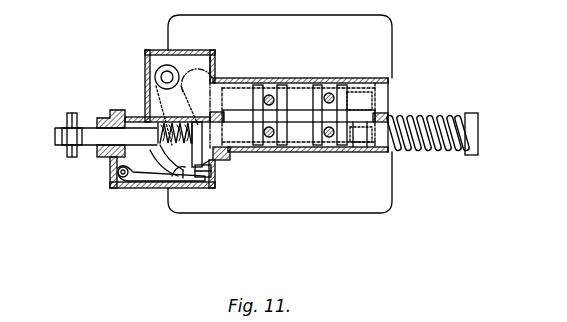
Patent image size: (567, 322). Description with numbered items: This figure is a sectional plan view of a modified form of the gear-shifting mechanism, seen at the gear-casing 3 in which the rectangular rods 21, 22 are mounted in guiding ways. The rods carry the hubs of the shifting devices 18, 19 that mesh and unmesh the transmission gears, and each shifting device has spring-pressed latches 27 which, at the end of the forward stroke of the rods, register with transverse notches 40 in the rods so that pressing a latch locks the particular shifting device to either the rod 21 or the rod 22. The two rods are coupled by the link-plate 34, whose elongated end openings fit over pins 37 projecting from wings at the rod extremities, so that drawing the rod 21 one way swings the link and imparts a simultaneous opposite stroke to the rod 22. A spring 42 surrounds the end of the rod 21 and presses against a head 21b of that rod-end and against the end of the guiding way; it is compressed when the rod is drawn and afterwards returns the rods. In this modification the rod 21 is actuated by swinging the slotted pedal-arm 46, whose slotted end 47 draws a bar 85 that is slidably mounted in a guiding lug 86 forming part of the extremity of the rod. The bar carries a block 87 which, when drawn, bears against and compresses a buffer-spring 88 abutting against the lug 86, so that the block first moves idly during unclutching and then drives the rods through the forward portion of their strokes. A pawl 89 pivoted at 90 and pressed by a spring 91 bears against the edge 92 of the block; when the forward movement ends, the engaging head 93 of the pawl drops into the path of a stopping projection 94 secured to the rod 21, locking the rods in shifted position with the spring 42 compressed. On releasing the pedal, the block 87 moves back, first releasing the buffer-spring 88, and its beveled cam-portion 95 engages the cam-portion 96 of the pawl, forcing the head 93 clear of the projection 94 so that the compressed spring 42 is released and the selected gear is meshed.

The gear-casing 3 is at (251, 114).
The shifting device 18 is at (281, 92).
The shifting device 19 is at (320, 90).
The rod 21 is at (368, 143).
The head 21b is at (478, 131).
The rod 22 is at (360, 92).
The latches 27 is at (330, 140).
The link-plate 34 is at (184, 72).
The pins 37 is at (160, 74).
The transverse notches 40 is at (302, 90).
The spring 42 is at (424, 115).
The pedal-arm 46 is at (62, 155).
The slotted end 47 is at (72, 113).
The bar 85 is at (108, 137).
The guiding lug 86 is at (157, 130).
The block 87 is at (236, 152).
The buffer-spring 88 is at (158, 155).
The pawl 89 is at (151, 177).
The pivot 90 is at (117, 178).
The spring 91 is at (134, 183).
The edge 92 is at (197, 177).
The engaging head 93 is at (183, 178).
The stopping projection 94 is at (206, 174).
The beveled cam-portion 95 is at (204, 168).
The cam-portion 96 is at (179, 182).